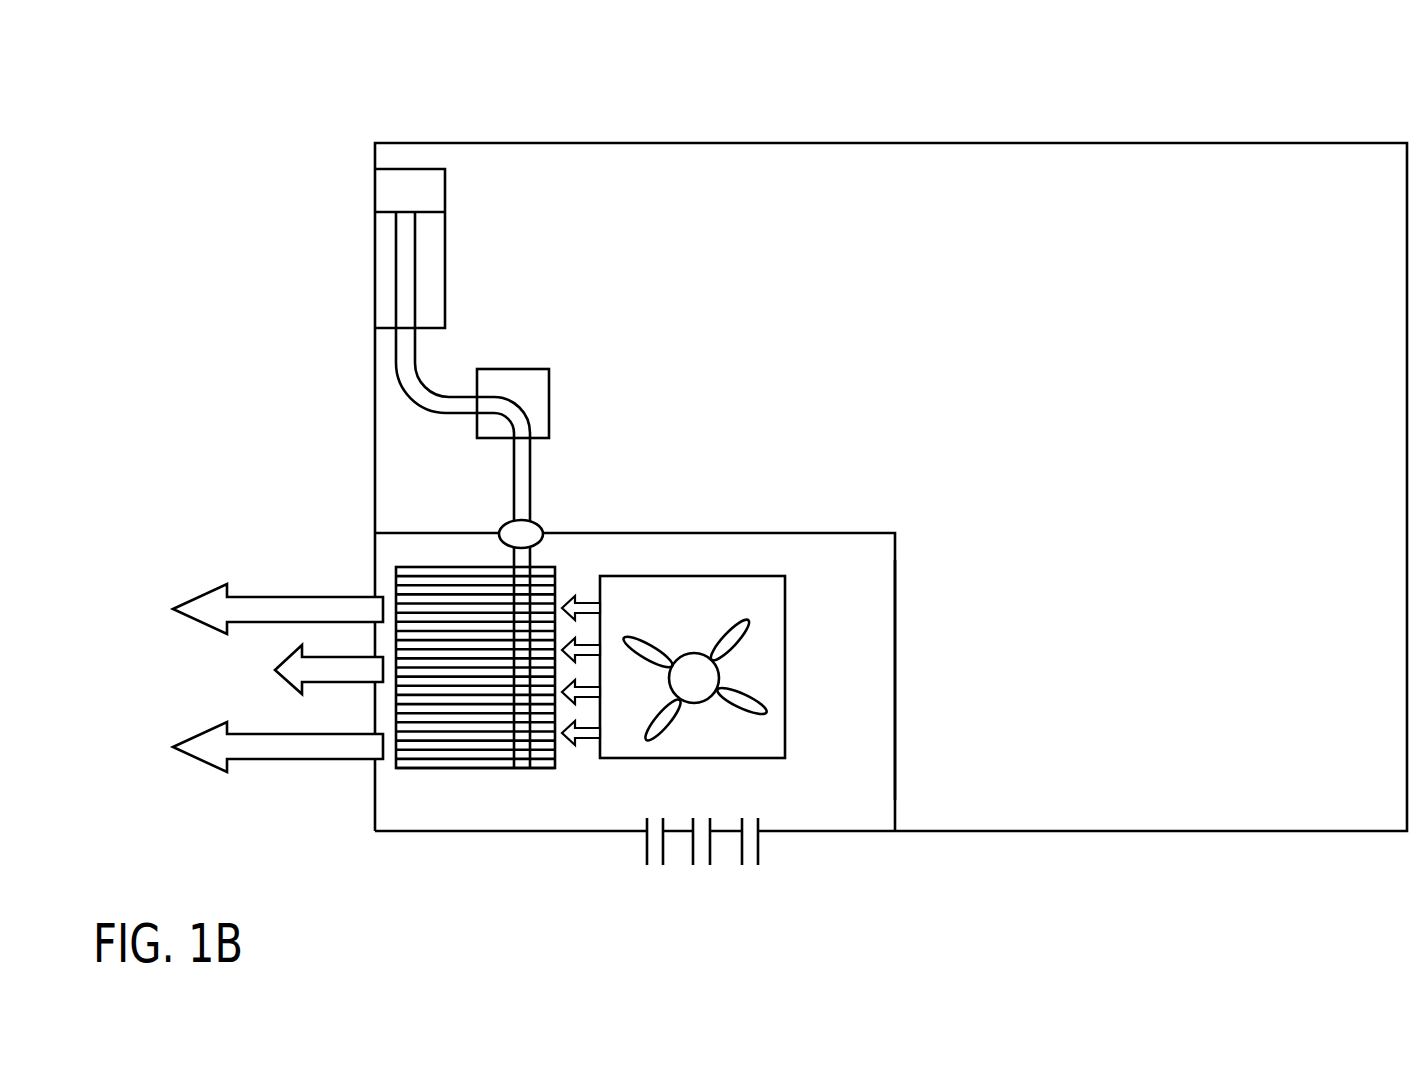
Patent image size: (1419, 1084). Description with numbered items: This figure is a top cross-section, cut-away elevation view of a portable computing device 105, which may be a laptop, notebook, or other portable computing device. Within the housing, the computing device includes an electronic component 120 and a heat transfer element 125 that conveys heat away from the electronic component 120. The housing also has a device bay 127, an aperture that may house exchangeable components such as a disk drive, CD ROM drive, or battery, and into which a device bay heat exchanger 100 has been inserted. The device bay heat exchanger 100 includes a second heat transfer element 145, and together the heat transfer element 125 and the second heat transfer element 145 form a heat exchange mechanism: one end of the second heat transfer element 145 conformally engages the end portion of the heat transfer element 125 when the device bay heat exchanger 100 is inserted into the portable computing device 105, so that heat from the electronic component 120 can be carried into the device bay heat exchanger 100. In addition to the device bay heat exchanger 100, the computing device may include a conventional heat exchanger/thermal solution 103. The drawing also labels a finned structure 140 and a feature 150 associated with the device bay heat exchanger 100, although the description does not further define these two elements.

The device bay heat exchanger 100 is at (890, 572).
The conventional heat exchanger/thermal solution 103 is at (468, 191).
The portable computing device 105 is at (1062, 143).
The electronic component 120 is at (581, 410).
The heat transfer element 125 is at (553, 490).
The device bay 127 is at (1005, 742).
The heat exchanger 140 is at (500, 547).
The second heat transfer element 145 is at (530, 557).
The fin stack 150 is at (462, 770).